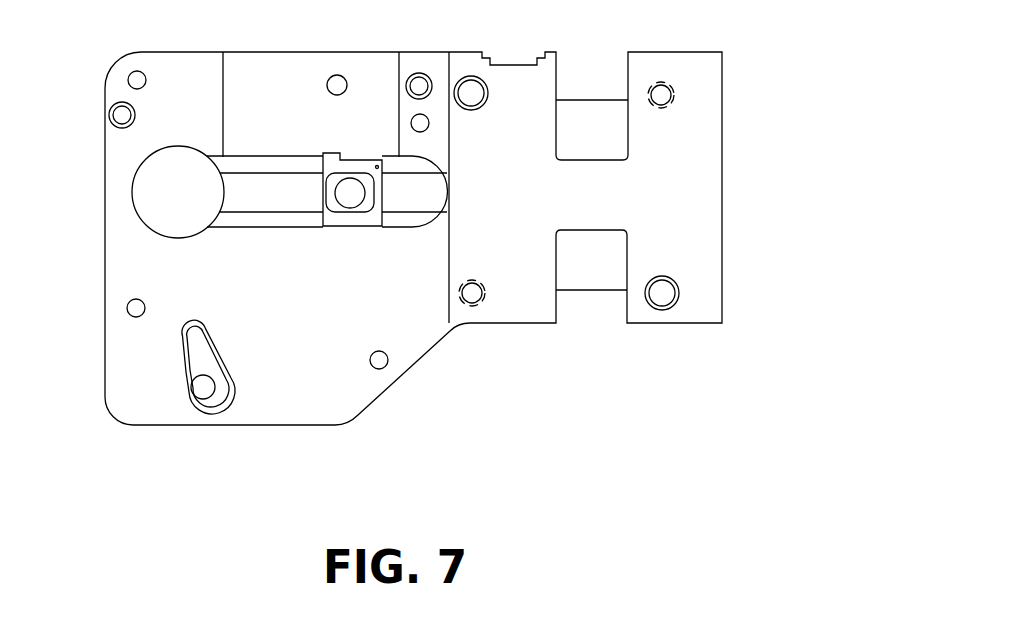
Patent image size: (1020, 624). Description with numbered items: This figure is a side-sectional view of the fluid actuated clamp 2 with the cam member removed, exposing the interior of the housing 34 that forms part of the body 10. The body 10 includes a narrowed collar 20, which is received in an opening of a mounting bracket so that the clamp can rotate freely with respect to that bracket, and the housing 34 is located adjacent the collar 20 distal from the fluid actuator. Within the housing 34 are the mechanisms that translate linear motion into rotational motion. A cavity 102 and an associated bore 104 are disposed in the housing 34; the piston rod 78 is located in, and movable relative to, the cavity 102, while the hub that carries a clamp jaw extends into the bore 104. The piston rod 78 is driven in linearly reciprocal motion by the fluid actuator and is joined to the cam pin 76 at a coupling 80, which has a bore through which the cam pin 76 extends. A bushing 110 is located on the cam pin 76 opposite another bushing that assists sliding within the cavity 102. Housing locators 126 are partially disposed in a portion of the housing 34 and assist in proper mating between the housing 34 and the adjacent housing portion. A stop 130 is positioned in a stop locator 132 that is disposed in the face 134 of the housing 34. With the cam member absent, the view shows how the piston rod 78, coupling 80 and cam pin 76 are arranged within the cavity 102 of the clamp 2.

The fluid actuated clamp 2 is at (758, 308).
The body 10 is at (680, 50).
The collar 20 is at (586, 98).
The housing 34 is at (150, 422).
The cam pin 76 is at (352, 188).
The piston rod 78 is at (422, 200).
The coupling 80 is at (357, 222).
The cavity 102 is at (253, 165).
The bore 104 is at (178, 155).
The bushing 110 is at (337, 208).
The housing locators 126 is at (113, 110).
The stop 130 is at (222, 391).
The stop locator 132 is at (228, 377).
The face 134 is at (267, 319).